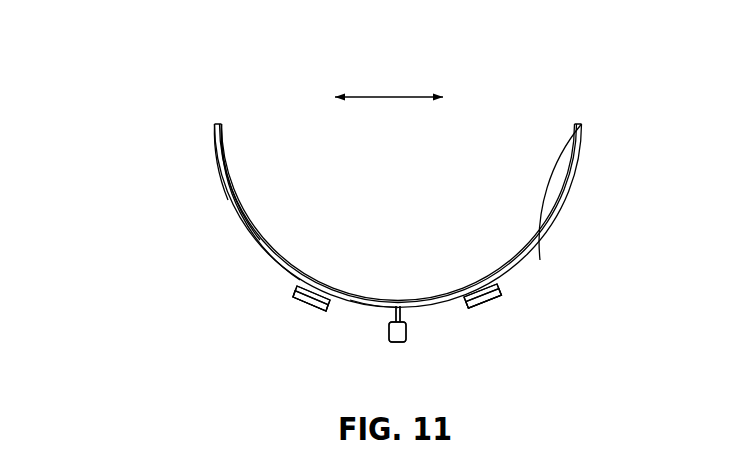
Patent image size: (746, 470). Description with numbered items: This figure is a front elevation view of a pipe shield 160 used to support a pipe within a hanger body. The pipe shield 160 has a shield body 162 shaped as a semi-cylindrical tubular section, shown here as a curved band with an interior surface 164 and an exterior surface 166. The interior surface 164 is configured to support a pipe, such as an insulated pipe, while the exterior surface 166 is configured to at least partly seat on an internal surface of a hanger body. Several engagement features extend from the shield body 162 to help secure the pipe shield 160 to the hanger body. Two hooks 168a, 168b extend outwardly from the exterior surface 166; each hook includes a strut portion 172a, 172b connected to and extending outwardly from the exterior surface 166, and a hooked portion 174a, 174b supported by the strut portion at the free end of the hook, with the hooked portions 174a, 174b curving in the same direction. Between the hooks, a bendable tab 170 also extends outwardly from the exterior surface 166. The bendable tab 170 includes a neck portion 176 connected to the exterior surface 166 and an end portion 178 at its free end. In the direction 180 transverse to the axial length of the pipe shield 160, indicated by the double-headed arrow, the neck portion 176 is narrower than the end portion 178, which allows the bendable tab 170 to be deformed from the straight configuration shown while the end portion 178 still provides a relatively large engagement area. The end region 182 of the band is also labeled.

The pipe shield 160 is at (178, 107).
The shield body 162 is at (591, 176).
The interior surface 164 is at (244, 170).
The exterior surface 166 is at (228, 237).
The hook 168a is at (304, 327).
The hook 168b is at (520, 296).
The bendable tab 170 is at (432, 332).
The strut portion 172a is at (297, 286).
The strut portion 172b is at (497, 285).
The hooked portion 174a is at (305, 304).
The hooked portion 174b is at (485, 303).
The neck portion 176 is at (373, 298).
The end portion 178 is at (405, 342).
The direction 180 is at (388, 97).
The band end 182 is at (220, 180).